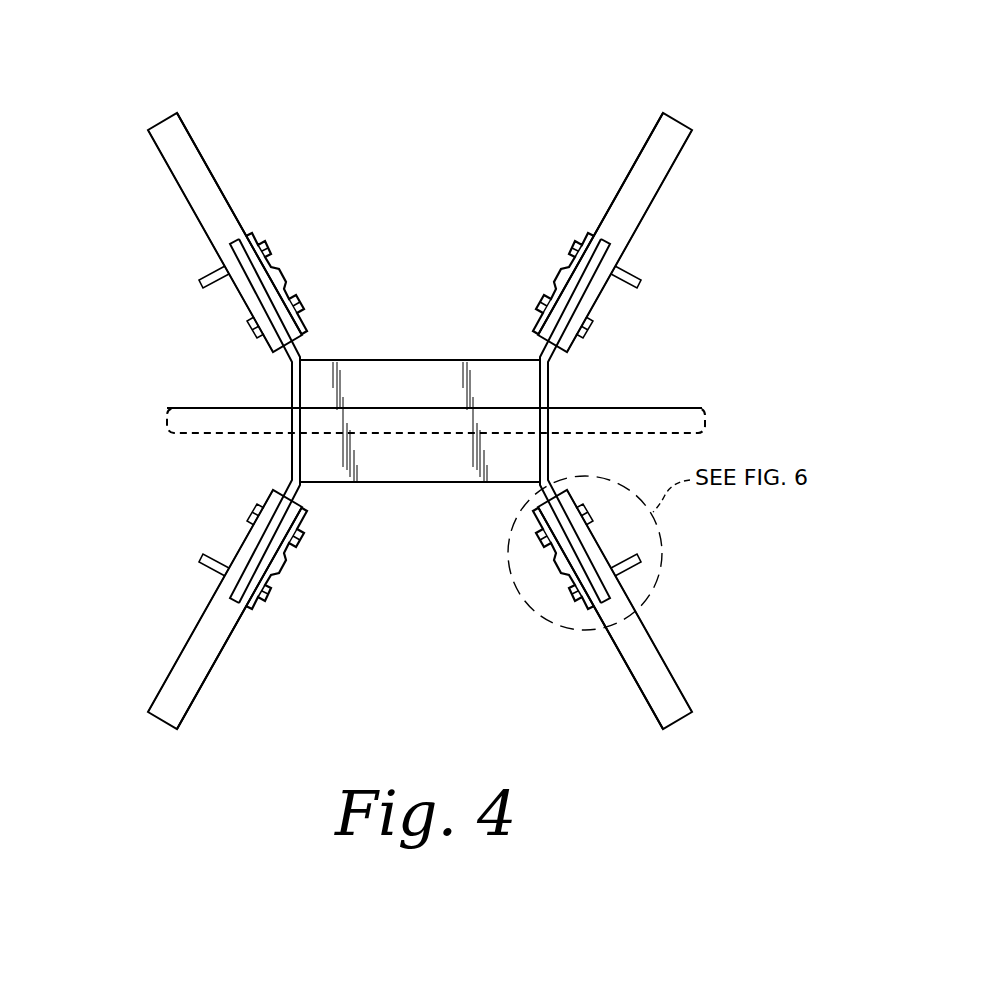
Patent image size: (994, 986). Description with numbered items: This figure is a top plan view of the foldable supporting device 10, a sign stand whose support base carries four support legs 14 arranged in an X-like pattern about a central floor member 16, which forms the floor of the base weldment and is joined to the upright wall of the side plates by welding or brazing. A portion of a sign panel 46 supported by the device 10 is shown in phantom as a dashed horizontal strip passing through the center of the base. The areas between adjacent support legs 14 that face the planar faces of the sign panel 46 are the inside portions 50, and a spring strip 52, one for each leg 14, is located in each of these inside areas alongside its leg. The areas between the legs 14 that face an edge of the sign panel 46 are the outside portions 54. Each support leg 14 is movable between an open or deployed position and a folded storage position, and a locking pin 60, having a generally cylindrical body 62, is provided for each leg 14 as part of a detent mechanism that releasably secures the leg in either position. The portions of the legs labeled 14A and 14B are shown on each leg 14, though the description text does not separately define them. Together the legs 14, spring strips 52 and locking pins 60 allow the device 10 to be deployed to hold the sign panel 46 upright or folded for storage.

The foldable supporting device 10 is at (662, 90).
The support leg 14 is at (172, 148).
The first leg of support member 14A is at (222, 188).
The second leg of support member 14B is at (188, 203).
The floor member 16 is at (402, 380).
The sign panel 46 is at (619, 406).
The inside portions 50 is at (398, 223).
The spring strip 52 is at (268, 257).
The outside portions 54 is at (679, 375).
The locking pin 60 is at (378, 421).
The cylindrical body 62 is at (203, 285).